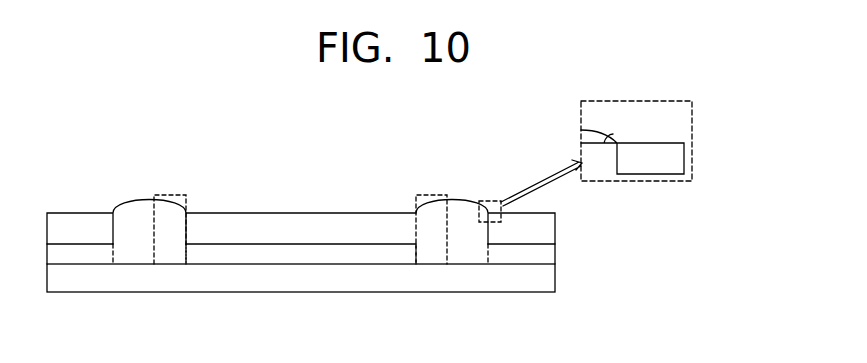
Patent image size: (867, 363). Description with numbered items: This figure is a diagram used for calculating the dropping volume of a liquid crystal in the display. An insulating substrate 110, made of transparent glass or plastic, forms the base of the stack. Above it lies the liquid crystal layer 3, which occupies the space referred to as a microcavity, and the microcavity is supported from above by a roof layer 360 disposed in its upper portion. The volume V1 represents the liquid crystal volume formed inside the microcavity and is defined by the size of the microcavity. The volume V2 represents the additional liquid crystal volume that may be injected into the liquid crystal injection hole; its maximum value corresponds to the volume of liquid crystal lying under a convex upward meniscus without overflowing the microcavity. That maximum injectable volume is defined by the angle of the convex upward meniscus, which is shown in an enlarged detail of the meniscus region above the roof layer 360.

The insulating substrate 110 is at (209, 280).
The liquid crystal layer 3 is at (381, 253).
The liquid crystal volume formed in the microcavity V1 is at (302, 253).
The roof layer 360 is at (323, 227).
The liquid crystal volume injected into the liquid crystal injection hole V2 is at (175, 193).